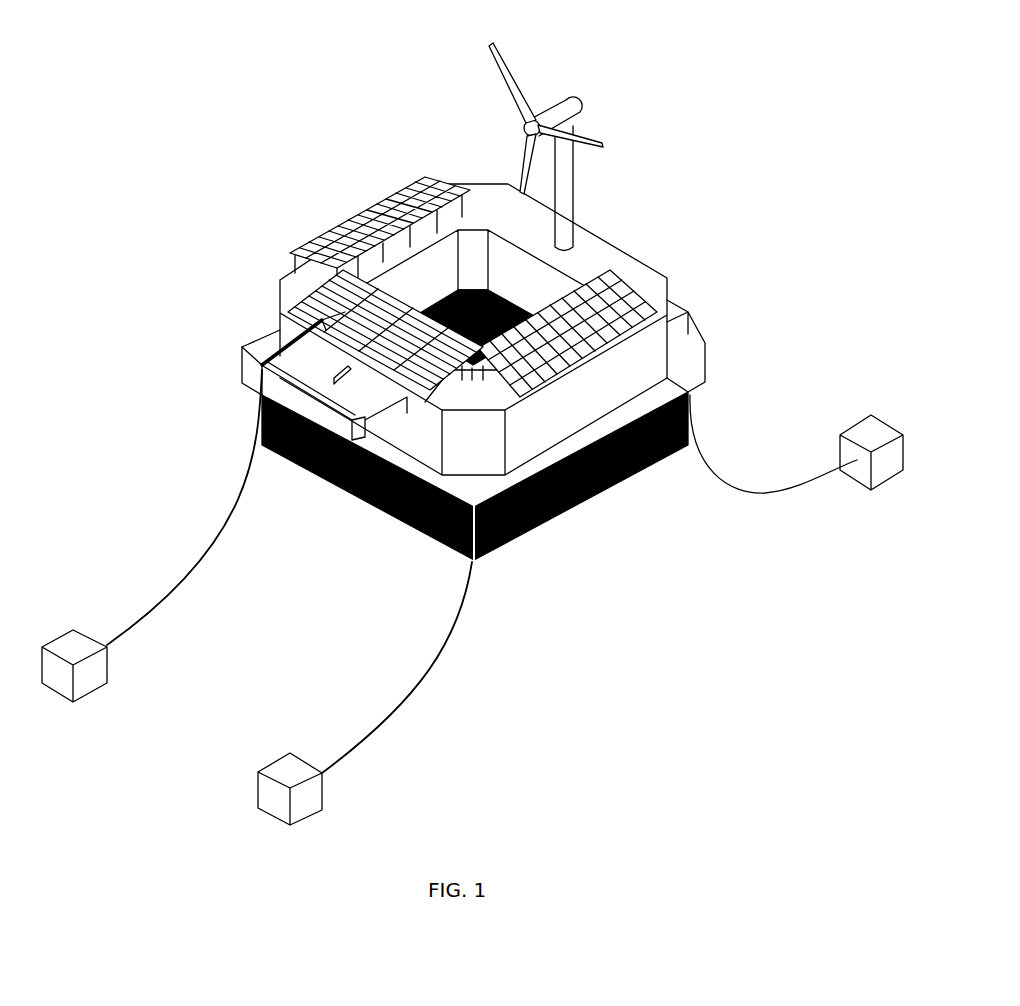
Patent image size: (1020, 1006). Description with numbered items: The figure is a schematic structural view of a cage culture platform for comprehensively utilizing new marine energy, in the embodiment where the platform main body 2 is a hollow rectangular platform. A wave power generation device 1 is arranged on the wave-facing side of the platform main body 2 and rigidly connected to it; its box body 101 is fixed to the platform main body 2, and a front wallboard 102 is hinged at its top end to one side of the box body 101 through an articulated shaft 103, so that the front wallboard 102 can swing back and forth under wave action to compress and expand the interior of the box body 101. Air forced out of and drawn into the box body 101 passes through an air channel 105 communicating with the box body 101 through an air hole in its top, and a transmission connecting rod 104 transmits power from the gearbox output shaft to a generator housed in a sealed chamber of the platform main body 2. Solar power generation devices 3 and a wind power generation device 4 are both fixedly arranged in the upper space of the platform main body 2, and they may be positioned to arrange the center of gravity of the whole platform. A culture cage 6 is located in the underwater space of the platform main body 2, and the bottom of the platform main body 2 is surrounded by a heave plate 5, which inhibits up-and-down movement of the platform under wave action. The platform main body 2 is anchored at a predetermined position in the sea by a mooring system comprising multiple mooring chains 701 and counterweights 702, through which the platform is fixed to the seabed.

The wave power generation device 1 is at (367, 423).
The platform main body 2 is at (595, 255).
The solar power generation devices 3 is at (372, 208).
The wind power generation device 4 is at (568, 168).
The heave plate 5 is at (688, 363).
The culture cage 6 is at (325, 475).
The mooring chains 701 is at (702, 447).
The counterweights 702 is at (73, 643).
The box body 101 is at (303, 355).
The front wallboard 102 is at (270, 385).
The articulated shaft 103 is at (262, 365).
The transmission connecting rod 104 is at (328, 402).
The air channel 105 is at (345, 362).